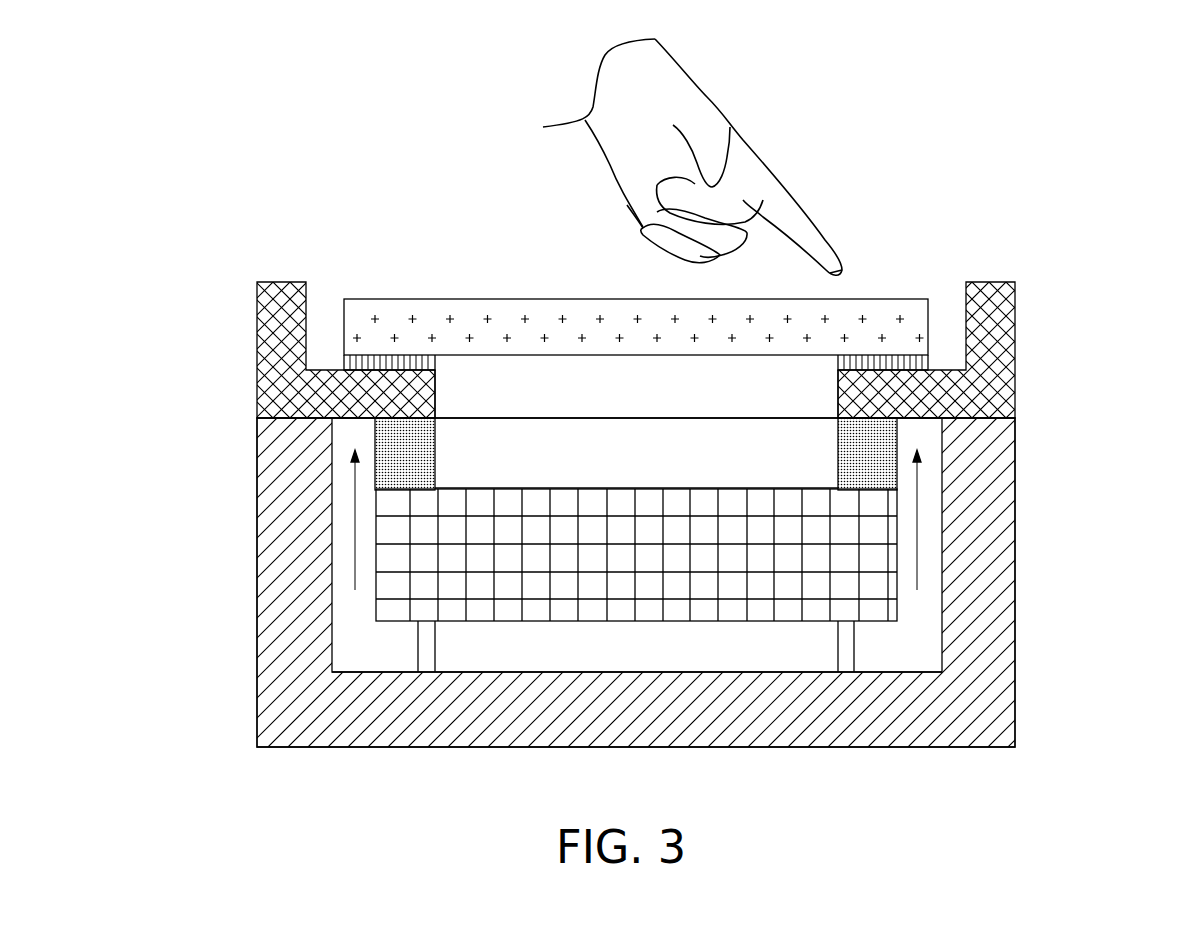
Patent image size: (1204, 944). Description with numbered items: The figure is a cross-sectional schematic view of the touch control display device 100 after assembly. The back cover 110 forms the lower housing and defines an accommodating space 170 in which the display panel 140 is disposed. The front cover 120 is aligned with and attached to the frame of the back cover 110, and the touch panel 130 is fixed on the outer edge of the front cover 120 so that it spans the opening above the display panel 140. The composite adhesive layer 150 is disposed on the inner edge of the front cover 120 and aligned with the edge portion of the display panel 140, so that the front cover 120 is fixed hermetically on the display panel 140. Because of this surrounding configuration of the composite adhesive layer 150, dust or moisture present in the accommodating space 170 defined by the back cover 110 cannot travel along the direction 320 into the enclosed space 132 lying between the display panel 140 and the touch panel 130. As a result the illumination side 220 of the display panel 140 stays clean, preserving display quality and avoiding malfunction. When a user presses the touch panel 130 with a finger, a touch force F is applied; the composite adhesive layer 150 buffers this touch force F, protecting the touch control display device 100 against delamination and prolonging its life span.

The touch control display device 100 is at (236, 98).
The back cover 110 is at (1055, 562).
The front cover 120 is at (1048, 324).
The touch panel 130 is at (887, 318).
The enclosed space 132 is at (740, 411).
The display panel 140 is at (596, 468).
The composite adhesive layer 150 is at (373, 433).
The accommodating space 170 is at (926, 636).
The illumination side 220 is at (645, 488).
The direction 320 is at (353, 517).
The touch force F is at (843, 288).